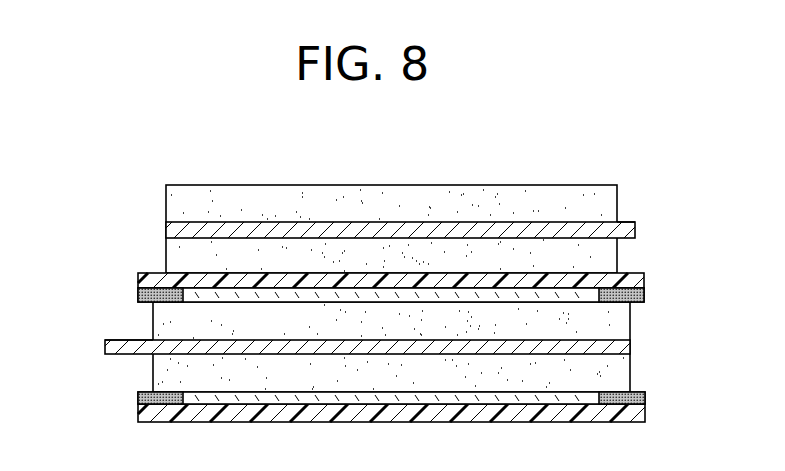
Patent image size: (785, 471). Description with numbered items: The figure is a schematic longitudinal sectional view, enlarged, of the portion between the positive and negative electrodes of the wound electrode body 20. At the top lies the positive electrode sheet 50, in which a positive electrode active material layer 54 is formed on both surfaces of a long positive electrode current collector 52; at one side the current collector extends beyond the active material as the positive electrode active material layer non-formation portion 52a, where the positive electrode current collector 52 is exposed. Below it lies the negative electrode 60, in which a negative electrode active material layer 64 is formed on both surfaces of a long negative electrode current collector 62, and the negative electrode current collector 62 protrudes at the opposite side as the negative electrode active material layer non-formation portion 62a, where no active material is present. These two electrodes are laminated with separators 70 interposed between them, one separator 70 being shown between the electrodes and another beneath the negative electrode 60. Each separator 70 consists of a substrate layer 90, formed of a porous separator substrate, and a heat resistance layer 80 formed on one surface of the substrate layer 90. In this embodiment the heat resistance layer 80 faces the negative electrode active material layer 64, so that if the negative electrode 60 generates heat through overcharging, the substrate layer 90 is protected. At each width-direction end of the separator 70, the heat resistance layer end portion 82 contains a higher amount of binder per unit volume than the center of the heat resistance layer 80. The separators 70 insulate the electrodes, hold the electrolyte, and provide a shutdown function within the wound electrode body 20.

The wound electrode body 20 is at (574, 160).
The positive electrode sheet 50 is at (397, 215).
The positive electrode current collector 52 is at (637, 231).
The positive electrode active material layer non-formation portion 52a is at (619, 222).
The positive electrode active material layer 54 is at (178, 250).
The negative electrode 60 is at (366, 349).
The negative electrode current collector 62 is at (105, 347).
The negative electrode active material layer non-formation portion 62a is at (118, 340).
The negative electrode active material layer 64 is at (622, 372).
The separator 70 is at (414, 348).
The heat resistance layer 80 is at (394, 349).
The heat resistance layer end portion 82 is at (138, 293).
The substrate layer 90 is at (646, 280).